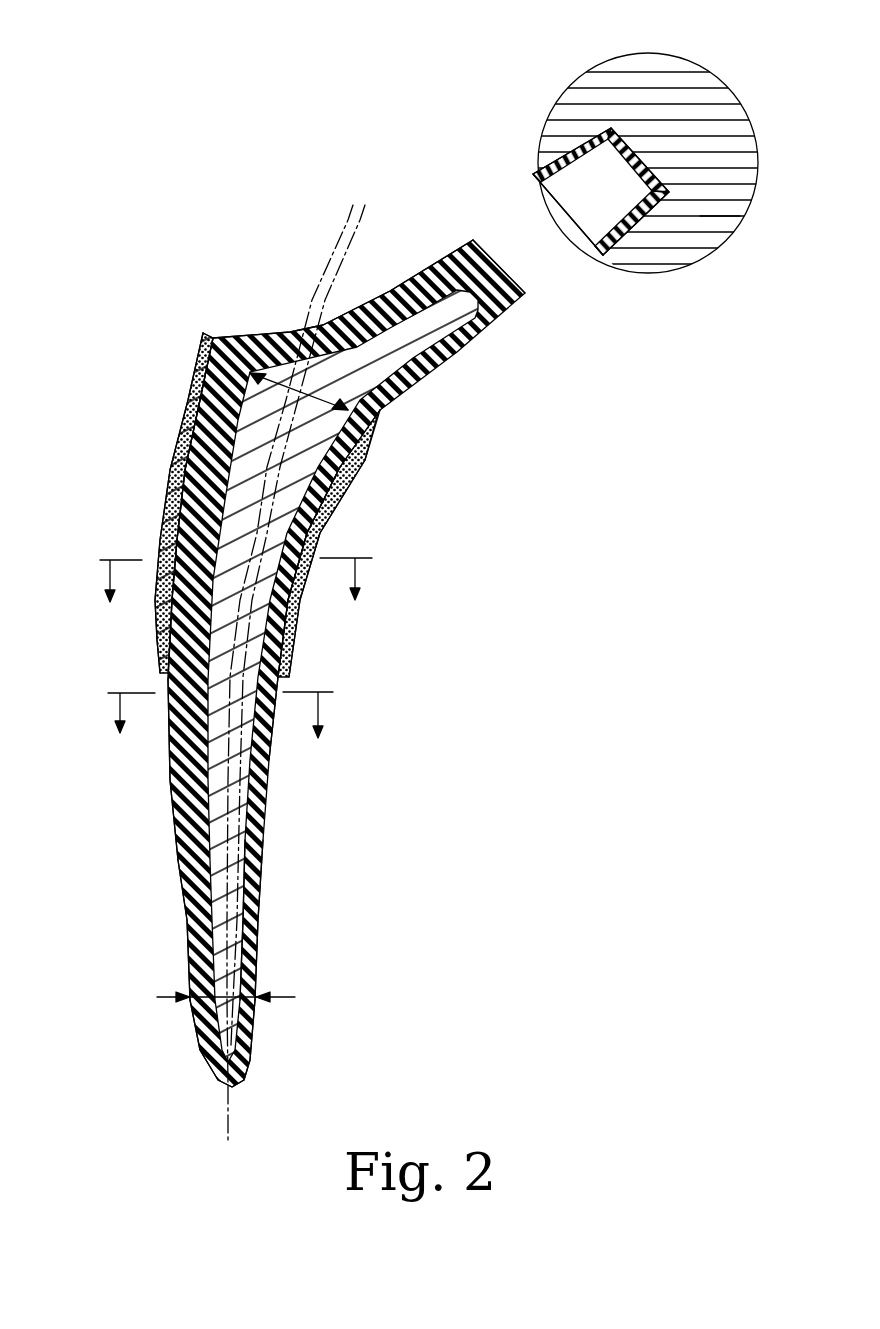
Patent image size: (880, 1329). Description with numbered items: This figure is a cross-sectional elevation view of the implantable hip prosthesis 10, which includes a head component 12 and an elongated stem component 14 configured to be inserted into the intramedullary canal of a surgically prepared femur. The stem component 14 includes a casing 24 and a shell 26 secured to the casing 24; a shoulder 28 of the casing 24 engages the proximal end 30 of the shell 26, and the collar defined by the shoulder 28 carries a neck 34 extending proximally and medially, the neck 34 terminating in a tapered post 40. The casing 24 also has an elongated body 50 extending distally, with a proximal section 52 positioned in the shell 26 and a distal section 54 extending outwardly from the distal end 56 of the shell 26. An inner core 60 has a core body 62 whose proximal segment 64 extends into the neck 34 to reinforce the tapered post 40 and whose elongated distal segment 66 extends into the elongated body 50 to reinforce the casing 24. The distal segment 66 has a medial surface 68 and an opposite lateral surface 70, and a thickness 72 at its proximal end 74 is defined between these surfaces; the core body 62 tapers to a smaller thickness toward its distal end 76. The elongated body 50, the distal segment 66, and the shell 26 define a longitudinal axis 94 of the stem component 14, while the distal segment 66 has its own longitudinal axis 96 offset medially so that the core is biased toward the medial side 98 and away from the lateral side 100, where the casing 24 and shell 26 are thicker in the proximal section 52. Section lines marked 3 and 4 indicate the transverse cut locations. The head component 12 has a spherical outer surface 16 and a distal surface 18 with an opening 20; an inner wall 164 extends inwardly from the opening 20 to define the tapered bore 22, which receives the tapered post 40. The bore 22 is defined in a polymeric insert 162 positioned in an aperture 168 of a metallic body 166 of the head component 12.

The implantable hip prosthesis 10 is at (151, 222).
The head component 12 is at (770, 101).
The stem component 14 is at (404, 603).
The spherical outer surface 16 is at (757, 207).
The distal surface 18 is at (602, 257).
The opening 20 is at (578, 236).
The bore 22 is at (558, 185).
The casing 24 is at (267, 816).
The shell 26 is at (347, 483).
The shoulder 28 is at (203, 349).
The proximal end of the shell 30 is at (352, 460).
The neck 34 is at (350, 320).
The tapered post 40 is at (510, 305).
The elongated body 50 is at (265, 778).
The proximal section 52 is at (310, 523).
The distal section 54 is at (266, 889).
The distal end of the shell 56 is at (168, 657).
The inner core 60 is at (183, 467).
The core body 62 is at (372, 433).
The proximal segment 64 is at (442, 338).
The distal segment 66 is at (262, 843).
The medial surface 68 is at (290, 640).
The lateral surface 70 is at (216, 497).
The thickness 72 is at (355, 403).
The proximal end 74 is at (203, 390).
The distal end 76 is at (255, 1061).
The longitudinal axis 94 is at (343, 245).
The longitudinal axis 96 is at (363, 224).
The medial side 98 is at (348, 512).
The lateral side 100 is at (166, 424).
The insert 162 is at (634, 232).
The inner wall 164 is at (646, 203).
The body 166 is at (718, 240).
The aperture 168 is at (666, 168).
The section line for FIG. 3 is at (236, 594).
The section line for FIG. 4 is at (220, 729).